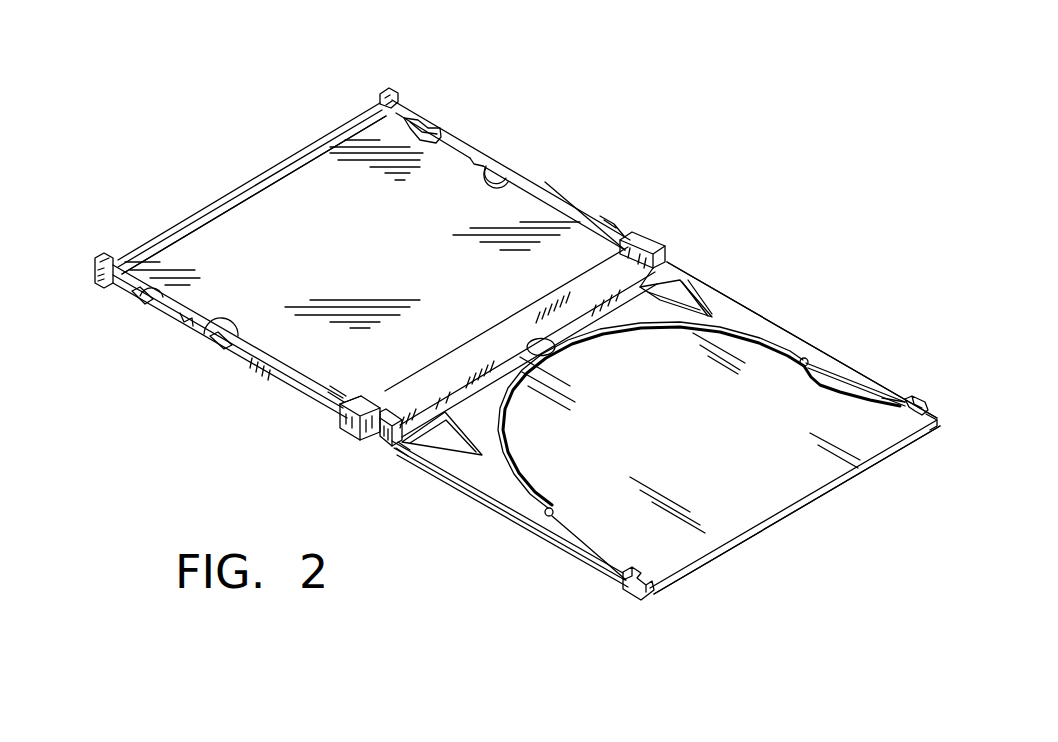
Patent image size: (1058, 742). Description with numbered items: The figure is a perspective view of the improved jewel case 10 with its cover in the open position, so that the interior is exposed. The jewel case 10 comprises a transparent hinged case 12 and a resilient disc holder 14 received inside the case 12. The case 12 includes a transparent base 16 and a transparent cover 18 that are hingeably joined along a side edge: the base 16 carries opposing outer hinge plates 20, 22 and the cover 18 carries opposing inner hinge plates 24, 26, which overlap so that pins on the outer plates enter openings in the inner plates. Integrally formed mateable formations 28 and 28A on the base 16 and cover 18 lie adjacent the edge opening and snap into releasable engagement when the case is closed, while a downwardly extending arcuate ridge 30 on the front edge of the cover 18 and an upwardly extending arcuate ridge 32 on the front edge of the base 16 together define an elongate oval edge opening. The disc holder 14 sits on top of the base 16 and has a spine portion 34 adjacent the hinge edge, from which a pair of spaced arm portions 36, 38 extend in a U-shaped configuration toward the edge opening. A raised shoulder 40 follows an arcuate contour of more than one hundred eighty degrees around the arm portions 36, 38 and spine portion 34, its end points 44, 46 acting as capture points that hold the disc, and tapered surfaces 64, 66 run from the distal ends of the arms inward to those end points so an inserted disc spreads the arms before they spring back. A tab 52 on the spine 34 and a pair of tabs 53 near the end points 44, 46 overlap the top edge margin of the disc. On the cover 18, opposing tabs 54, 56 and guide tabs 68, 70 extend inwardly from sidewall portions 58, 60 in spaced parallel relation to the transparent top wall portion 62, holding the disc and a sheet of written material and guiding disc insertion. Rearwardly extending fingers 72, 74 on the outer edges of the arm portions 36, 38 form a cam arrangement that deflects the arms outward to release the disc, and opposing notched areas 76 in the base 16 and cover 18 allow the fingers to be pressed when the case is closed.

The jewel case 10 is at (698, 146).
The hinged case 12 is at (584, 186).
The disc holder 14 is at (766, 300).
The base 16 is at (828, 476).
The cover 18 is at (282, 196).
The hinge plate 20 is at (362, 422).
The hinge plate 22 is at (658, 240).
The hinge plate 24 is at (386, 450).
The hinge plate 26 is at (674, 278).
The mateable formation 28 is at (914, 398).
The mateable formation 28A is at (386, 90).
The arcuate ridge 30 is at (348, 124).
The arcuate ridge 32 is at (898, 438).
The spine portion 34 is at (330, 412).
The arm portion 36 is at (493, 500).
The arm portion 38 is at (772, 332).
The raised shoulder 40 is at (802, 330).
The end point 44 is at (554, 518).
The end point 46 is at (812, 370).
The tab 52 is at (540, 344).
The tab 53 is at (808, 362).
The tab 54 is at (222, 346).
The tab 56 is at (500, 174).
The sidewall portion 58 is at (262, 370).
The sidewall portion 60 is at (546, 186).
The top wall portion 62 is at (198, 238).
The tapered surface 64 is at (682, 568).
The tapered surface 66 is at (872, 390).
The guide tab 68 is at (148, 300).
The guide tab 70 is at (426, 130).
The finger 72 is at (443, 472).
The finger 74 is at (716, 302).
The notched area 76 is at (612, 226).